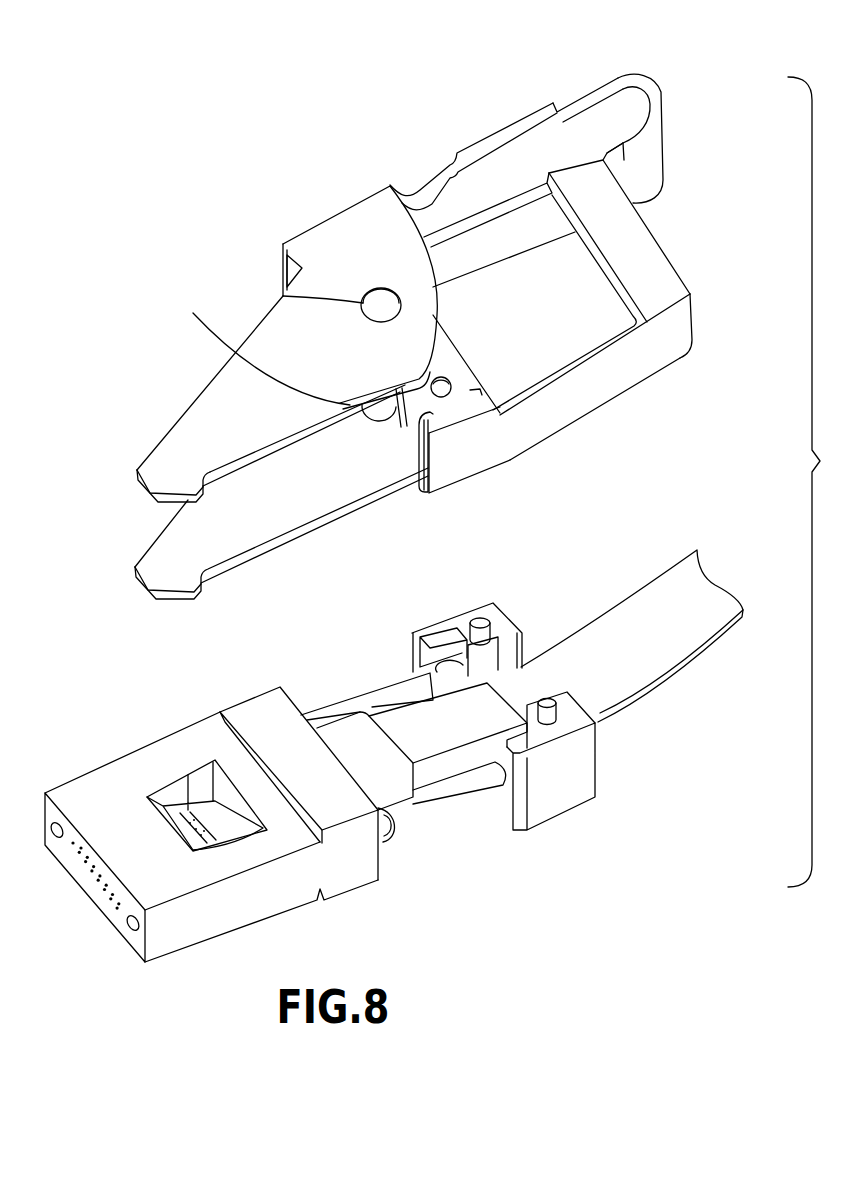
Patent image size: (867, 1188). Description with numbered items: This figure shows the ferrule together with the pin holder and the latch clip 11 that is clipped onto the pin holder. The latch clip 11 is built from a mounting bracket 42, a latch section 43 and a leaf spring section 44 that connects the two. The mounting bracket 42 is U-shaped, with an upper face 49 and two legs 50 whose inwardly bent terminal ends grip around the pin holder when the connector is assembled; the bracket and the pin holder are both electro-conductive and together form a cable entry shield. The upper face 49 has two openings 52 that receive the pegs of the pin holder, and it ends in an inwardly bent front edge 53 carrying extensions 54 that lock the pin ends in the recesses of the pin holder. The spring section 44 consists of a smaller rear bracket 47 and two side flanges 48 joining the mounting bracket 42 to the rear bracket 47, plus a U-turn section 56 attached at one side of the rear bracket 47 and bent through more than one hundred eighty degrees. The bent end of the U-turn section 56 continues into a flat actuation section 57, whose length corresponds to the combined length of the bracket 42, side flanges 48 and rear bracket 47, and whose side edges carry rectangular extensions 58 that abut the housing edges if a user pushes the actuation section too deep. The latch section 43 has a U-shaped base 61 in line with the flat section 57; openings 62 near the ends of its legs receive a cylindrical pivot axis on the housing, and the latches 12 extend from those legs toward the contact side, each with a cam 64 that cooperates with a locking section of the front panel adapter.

The latch clip 11 is at (337, 213).
The latch 12 is at (183, 447).
The mounting bracket 42 is at (458, 413).
The latch section 43 is at (200, 410).
The leaf spring section 44 is at (638, 240).
The rear bracket 47 is at (667, 297).
The side flange 48 is at (607, 348).
The upper face 49 is at (448, 360).
The leg 50 is at (453, 468).
The opening 52 is at (452, 385).
The inwardly bent front edge 53 is at (407, 430).
The extension 54 is at (398, 423).
The U-turn section 56 is at (655, 95).
The flat actuation section 57 is at (497, 163).
The rectangular extension 58 is at (553, 102).
The U-shaped base 61 is at (298, 250).
The opening 62 is at (283, 295).
The cam 64 is at (177, 587).